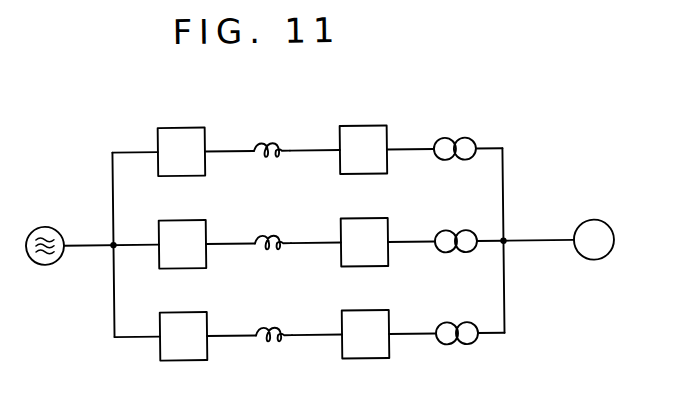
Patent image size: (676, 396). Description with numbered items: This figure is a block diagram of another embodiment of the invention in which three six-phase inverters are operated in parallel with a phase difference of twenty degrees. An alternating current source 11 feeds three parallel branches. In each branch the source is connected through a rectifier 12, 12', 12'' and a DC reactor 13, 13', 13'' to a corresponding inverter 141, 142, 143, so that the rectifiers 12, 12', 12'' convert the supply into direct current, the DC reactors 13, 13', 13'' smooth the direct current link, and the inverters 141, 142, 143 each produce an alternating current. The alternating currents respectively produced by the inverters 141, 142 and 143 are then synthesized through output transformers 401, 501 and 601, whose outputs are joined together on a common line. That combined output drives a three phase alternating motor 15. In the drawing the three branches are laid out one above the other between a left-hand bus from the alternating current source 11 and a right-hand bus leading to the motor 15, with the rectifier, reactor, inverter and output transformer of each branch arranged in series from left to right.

The alternating current source 11 is at (45, 224).
The rectifier 12 is at (181, 132).
The rectifier 12' is at (182, 228).
The rectifier 12'' is at (183, 317).
The DC reactor 13 is at (271, 130).
The DC reactor 13' is at (272, 222).
The DC reactor 13'' is at (275, 318).
The inverter 141 is at (366, 126).
The inverter 142 is at (366, 219).
The inverter 143 is at (366, 311).
The output transformer 401 is at (449, 140).
The output transformer 501 is at (449, 232).
The output transformer 601 is at (449, 324).
The three phase alternating motor 15 is at (594, 223).